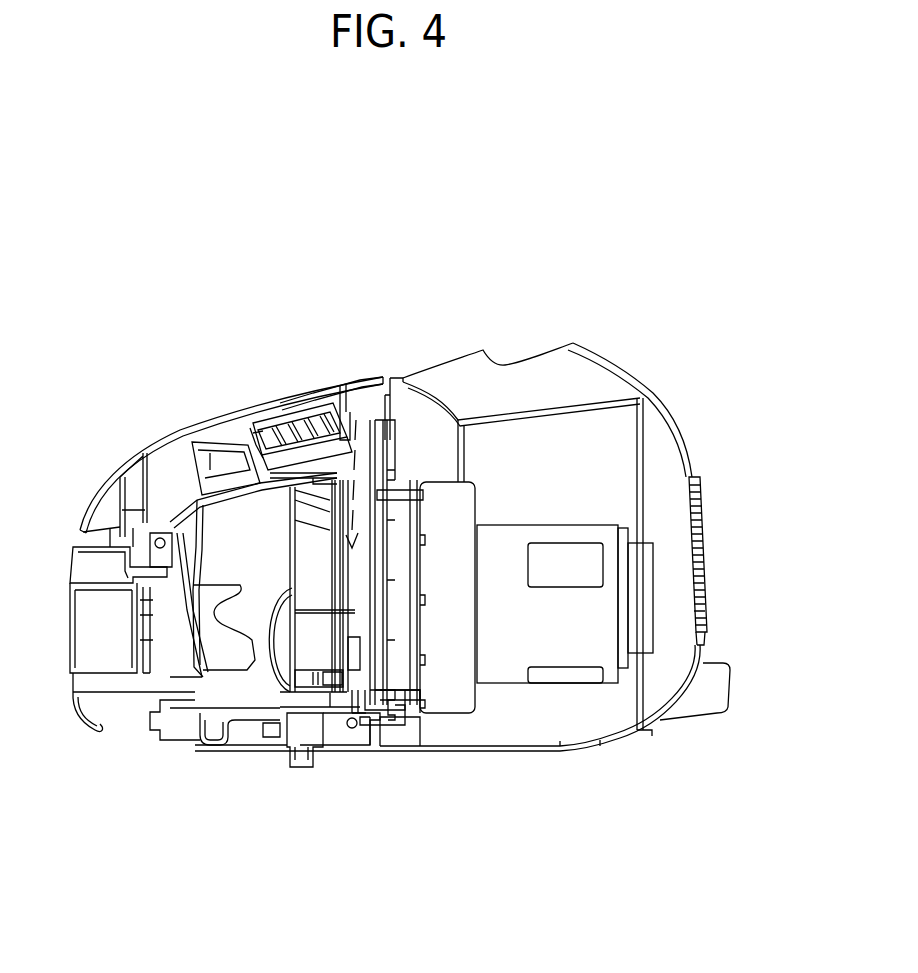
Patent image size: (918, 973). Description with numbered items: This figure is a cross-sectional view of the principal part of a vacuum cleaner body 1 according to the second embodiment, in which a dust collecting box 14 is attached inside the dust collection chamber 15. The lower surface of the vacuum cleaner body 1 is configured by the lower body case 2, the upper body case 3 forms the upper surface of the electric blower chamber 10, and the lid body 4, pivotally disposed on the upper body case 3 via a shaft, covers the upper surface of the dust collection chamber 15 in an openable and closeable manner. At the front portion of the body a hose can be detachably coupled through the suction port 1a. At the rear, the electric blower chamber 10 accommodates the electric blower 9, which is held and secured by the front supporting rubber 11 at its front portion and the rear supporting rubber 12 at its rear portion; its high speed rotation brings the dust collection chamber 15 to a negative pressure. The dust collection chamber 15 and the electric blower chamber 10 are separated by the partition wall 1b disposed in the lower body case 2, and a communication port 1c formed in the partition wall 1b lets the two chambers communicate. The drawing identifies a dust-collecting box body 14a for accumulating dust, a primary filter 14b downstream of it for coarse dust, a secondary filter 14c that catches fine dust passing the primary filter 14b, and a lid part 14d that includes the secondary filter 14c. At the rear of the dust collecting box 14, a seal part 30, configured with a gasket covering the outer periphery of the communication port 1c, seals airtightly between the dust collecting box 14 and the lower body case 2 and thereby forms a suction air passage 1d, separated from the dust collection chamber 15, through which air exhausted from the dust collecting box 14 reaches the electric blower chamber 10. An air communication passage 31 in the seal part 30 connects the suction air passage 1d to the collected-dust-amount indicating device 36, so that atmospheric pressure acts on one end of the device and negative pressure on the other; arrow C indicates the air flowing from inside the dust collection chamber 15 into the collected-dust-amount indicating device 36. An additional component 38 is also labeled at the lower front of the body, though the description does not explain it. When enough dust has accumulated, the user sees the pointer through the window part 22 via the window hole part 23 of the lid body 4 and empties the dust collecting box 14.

The vacuum cleaner body 1 is at (757, 871).
The suction port 1a is at (103, 632).
The partition wall 1b is at (386, 492).
The communication port 1c is at (378, 650).
The suction air passage 1d is at (357, 637).
The lower body case 2 is at (487, 749).
The upper body case 3 is at (618, 362).
The lid body 4 is at (340, 378).
The electric blower 9 is at (492, 653).
The electric blower chamber 10 is at (562, 727).
The front supporting rubber 11 is at (407, 687).
The rear supporting rubber 12 is at (650, 625).
The dust collecting box 14 is at (197, 498).
The dust-collecting box body 14a is at (198, 715).
The primary filter 14b is at (275, 657).
The secondary filter 14c is at (313, 657).
The lid part 14d is at (358, 635).
The dust collection chamber 15 is at (187, 443).
The window part 22 is at (297, 407).
The window hole part 23 is at (277, 413).
The seal part 30 is at (420, 497).
The air communication passage 31 is at (380, 470).
The collected-dust-amount indicating device 36 is at (257, 420).
The drain channel 38 is at (187, 637).
The arrow C is at (352, 413).